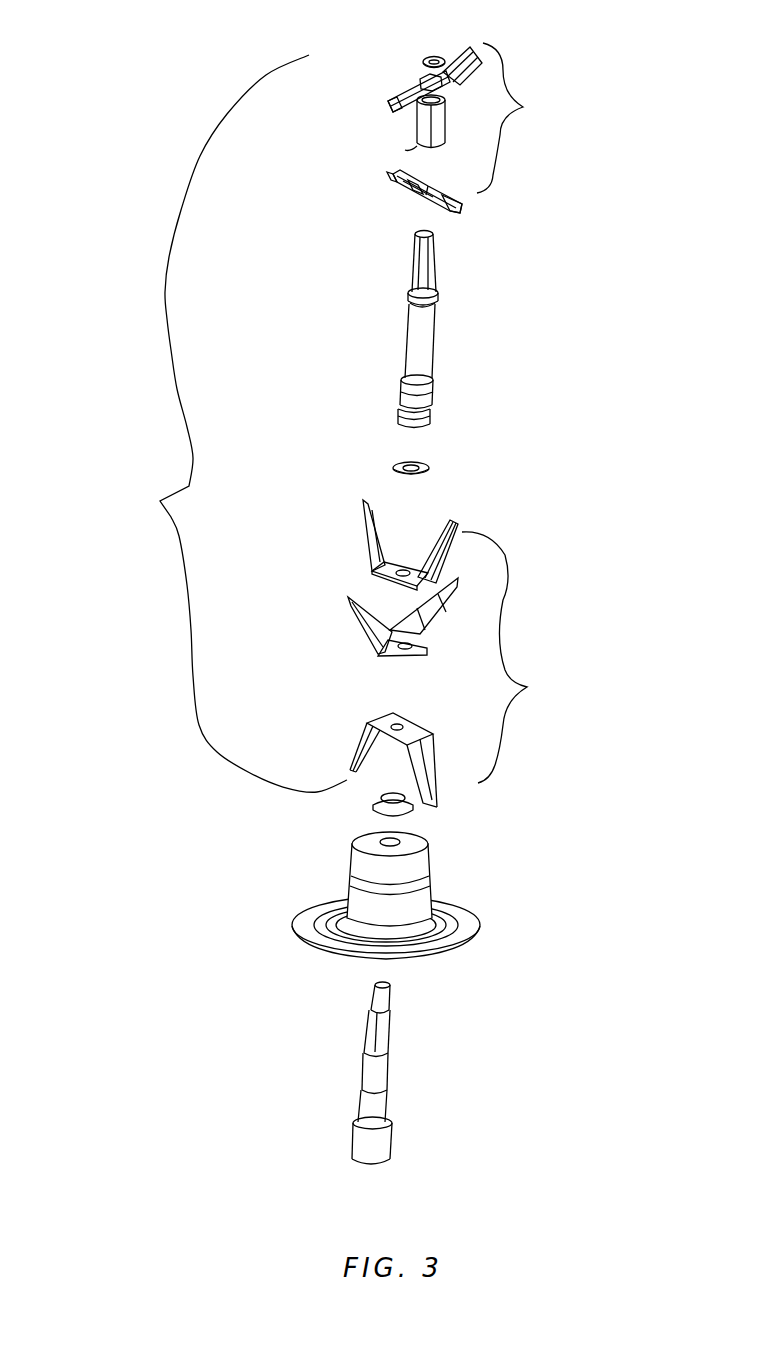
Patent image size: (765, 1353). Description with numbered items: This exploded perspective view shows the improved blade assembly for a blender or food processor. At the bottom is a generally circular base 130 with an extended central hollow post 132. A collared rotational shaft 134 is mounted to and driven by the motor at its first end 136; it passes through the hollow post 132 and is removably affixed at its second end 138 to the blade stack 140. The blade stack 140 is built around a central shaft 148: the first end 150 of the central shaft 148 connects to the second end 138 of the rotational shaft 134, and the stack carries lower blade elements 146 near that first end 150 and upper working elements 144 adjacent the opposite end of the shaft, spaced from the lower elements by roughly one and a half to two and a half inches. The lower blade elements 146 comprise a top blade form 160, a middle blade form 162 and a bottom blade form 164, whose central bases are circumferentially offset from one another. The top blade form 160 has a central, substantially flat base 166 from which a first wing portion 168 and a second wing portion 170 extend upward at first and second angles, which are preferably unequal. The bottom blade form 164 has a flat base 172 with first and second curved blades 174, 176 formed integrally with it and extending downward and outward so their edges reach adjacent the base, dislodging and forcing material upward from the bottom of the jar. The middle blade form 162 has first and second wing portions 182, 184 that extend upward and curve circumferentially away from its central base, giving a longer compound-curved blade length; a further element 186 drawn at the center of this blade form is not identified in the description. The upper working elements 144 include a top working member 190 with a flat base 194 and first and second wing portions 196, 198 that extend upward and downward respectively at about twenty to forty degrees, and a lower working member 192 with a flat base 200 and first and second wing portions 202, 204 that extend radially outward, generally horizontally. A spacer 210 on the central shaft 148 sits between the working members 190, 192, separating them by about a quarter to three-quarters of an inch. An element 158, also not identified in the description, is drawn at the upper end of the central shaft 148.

The base 130 is at (480, 925).
The hollow post 132 is at (432, 873).
The collared rotational shaft 134 is at (423, 1068).
The first end 136 is at (392, 1160).
The second end 138 is at (395, 985).
The blade stack 140 is at (207, 423).
The upper working elements 144 is at (536, 118).
The lower blade elements 146 is at (527, 657).
The central shaft 148 is at (479, 323).
The first end 150 is at (433, 420).
The shaft upper end 158 is at (437, 237).
The top blade form 160 is at (400, 529).
The middle blade form 162 is at (368, 630).
The bottom blade form 164 is at (374, 749).
The base 166 is at (403, 560).
The first wing portion 168 is at (457, 523).
The second wing portion 170 is at (360, 503).
The base 172 is at (410, 720).
The first curved blade 174 is at (440, 777).
The second curved blade 176 is at (350, 770).
The first wing portion 182 is at (460, 607).
The second wing portion 184 is at (373, 640).
The middle blade hub 186 is at (445, 655).
The top working member 190 is at (397, 82).
The lower working member 192 is at (372, 202).
The base 194 is at (447, 97).
The first wing portion 196 is at (472, 44).
The second wing portion 198 is at (390, 107).
The base 200 is at (410, 200).
The first wing portion 202 is at (460, 209).
The second wing portion 204 is at (385, 172).
The spacer 210 is at (408, 149).